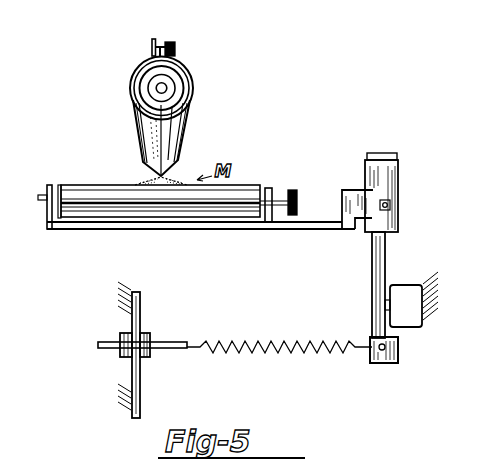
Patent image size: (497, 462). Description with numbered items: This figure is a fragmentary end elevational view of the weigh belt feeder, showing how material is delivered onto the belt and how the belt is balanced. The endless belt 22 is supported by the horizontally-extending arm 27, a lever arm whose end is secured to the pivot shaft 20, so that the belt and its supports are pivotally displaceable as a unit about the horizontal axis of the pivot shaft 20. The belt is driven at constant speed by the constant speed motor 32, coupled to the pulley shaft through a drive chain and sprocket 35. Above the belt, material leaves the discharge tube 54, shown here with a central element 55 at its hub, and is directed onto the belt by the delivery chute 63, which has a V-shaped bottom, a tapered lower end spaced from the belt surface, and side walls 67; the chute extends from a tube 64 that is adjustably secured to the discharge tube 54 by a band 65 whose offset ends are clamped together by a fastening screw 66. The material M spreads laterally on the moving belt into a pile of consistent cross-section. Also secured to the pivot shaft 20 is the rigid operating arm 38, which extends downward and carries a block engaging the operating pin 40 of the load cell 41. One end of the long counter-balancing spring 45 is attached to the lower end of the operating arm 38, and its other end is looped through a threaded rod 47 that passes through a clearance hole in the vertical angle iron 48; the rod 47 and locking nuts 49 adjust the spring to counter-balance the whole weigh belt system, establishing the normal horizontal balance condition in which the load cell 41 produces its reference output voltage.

The pivot shaft 20 is at (396, 206).
The endless belt 22 is at (80, 185).
The horizontally-extending arm 27 is at (226, 229).
The constant speed motor 32 is at (398, 165).
The sprocket 35 is at (292, 190).
The operating arm 38 is at (399, 226).
The operating pin 40 is at (392, 290).
The load cell 41 is at (410, 328).
The counter-balancing spring 45 is at (240, 353).
The threaded rod 47 is at (167, 342).
The vertical angle iron 48 is at (140, 305).
The locking nuts 49 is at (120, 336).
The discharge tube 54 is at (132, 87).
The hub 55 is at (170, 79).
The delivery chute 63 is at (170, 128).
The tube 64 is at (135, 72).
The band 65 is at (177, 57).
The fastening screw 66 is at (152, 43).
The side walls 67 is at (138, 136).